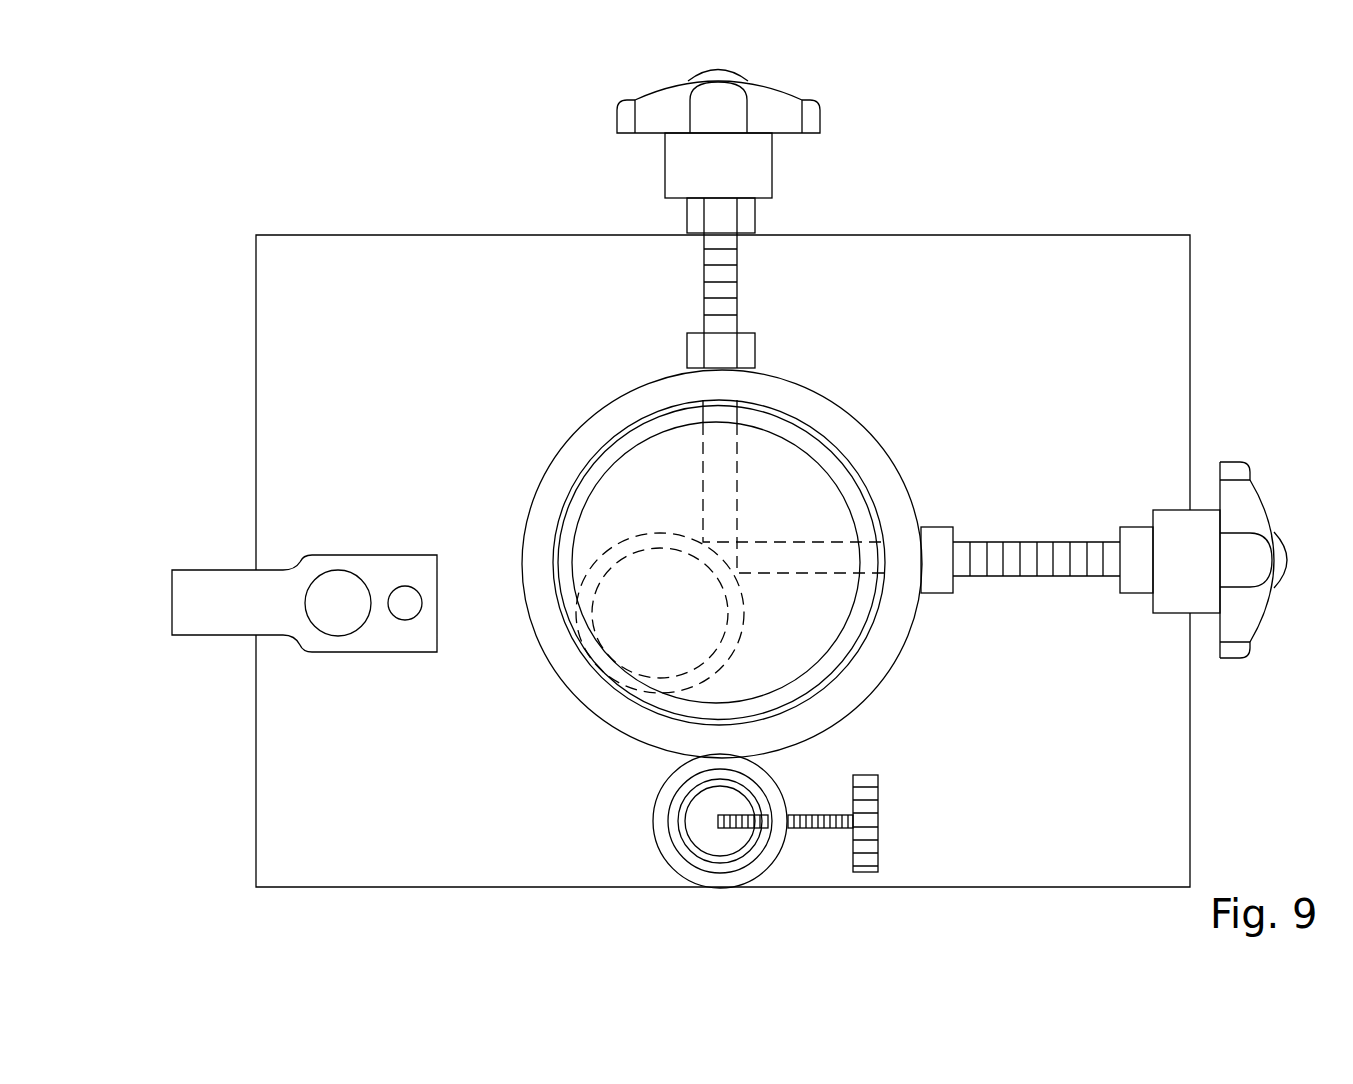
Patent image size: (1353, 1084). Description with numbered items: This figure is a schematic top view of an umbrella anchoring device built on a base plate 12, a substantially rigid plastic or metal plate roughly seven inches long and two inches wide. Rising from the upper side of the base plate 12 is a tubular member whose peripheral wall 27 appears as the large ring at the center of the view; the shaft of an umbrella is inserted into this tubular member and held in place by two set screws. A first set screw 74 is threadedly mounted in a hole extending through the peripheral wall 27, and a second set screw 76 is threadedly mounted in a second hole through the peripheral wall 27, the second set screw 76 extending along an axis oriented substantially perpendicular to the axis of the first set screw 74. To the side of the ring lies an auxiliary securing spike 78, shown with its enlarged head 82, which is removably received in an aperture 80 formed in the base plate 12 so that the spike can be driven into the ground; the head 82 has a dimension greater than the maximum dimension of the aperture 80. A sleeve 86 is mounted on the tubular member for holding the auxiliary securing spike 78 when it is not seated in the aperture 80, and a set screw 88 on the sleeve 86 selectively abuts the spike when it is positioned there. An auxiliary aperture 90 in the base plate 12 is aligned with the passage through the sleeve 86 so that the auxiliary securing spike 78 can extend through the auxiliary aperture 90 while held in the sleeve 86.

The base plate 12 is at (553, 295).
The second set screw 76 is at (777, 115).
The peripheral wall 27 is at (860, 443).
The first set screw 74 is at (1245, 502).
The head 82 is at (233, 578).
The auxiliary securing spike 78 is at (280, 643).
The aperture 80 is at (337, 610).
The sleeve 86 is at (855, 811).
The set screw 88 is at (878, 838).
The auxiliary aperture 90 is at (700, 843).